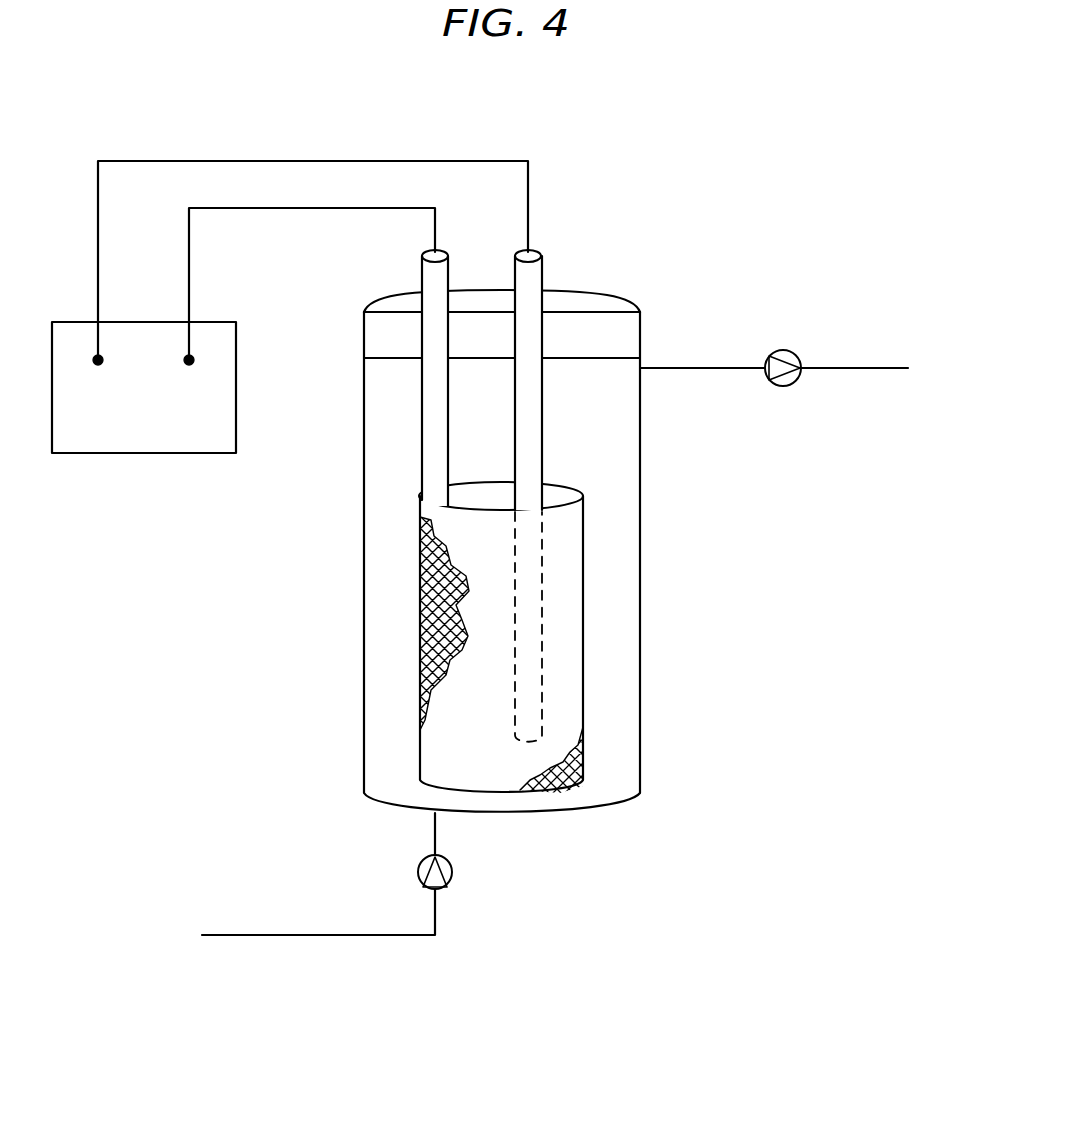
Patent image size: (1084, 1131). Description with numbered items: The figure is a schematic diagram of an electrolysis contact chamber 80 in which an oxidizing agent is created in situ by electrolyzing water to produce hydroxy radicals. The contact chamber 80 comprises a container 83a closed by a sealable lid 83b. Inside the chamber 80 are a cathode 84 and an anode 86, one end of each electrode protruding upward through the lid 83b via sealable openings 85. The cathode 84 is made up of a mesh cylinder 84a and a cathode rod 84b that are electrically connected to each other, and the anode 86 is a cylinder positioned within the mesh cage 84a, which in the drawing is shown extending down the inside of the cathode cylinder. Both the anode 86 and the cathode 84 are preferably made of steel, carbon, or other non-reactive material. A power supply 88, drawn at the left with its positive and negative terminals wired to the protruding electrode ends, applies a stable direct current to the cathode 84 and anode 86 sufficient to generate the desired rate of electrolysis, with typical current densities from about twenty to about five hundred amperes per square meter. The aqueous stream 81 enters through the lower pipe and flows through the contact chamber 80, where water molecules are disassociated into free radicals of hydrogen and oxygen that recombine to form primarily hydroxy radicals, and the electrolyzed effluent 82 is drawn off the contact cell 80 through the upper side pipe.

The contact chamber 80 is at (458, 528).
The aqueous stream 81 is at (300, 935).
The electrolyzed effluent 82 is at (703, 368).
The container 83a is at (641, 580).
The sealable lid 83b is at (593, 292).
The cathode 84 is at (444, 637).
The mesh cylinder 84a is at (420, 713).
The cathode rod 84b is at (420, 418).
The sealable openings 85 is at (450, 290).
The anode 86 is at (543, 430).
The power supply 88 is at (254, 379).